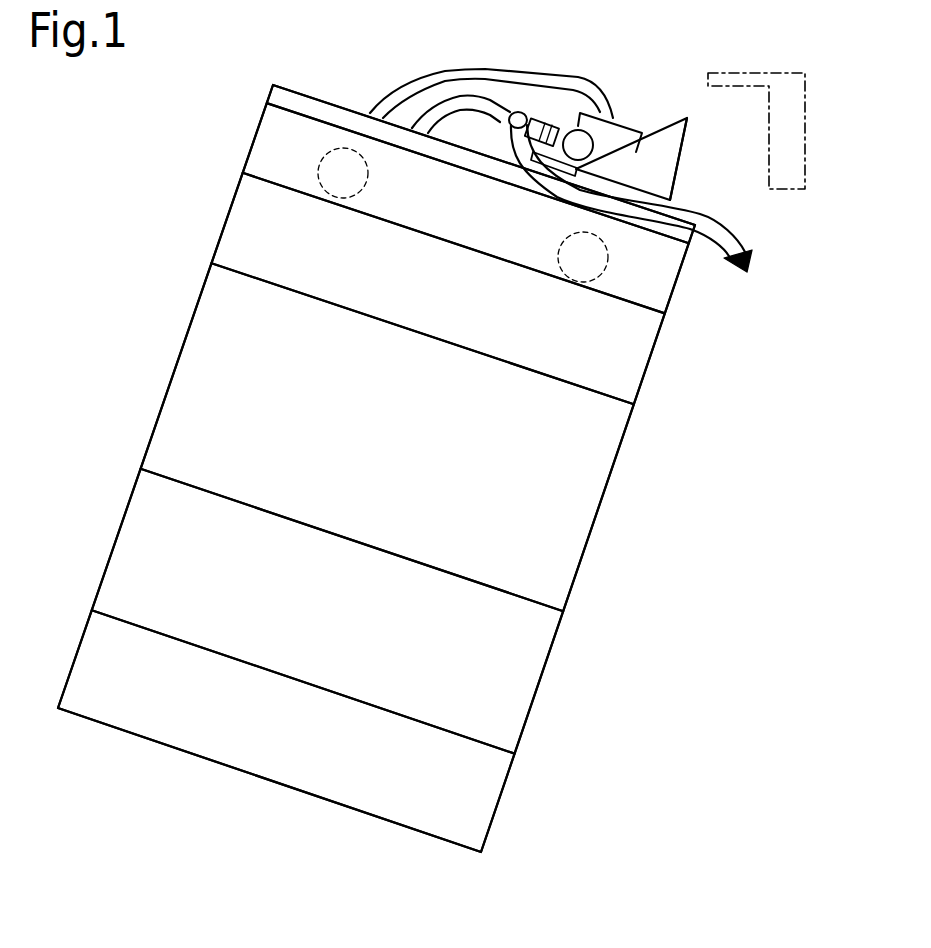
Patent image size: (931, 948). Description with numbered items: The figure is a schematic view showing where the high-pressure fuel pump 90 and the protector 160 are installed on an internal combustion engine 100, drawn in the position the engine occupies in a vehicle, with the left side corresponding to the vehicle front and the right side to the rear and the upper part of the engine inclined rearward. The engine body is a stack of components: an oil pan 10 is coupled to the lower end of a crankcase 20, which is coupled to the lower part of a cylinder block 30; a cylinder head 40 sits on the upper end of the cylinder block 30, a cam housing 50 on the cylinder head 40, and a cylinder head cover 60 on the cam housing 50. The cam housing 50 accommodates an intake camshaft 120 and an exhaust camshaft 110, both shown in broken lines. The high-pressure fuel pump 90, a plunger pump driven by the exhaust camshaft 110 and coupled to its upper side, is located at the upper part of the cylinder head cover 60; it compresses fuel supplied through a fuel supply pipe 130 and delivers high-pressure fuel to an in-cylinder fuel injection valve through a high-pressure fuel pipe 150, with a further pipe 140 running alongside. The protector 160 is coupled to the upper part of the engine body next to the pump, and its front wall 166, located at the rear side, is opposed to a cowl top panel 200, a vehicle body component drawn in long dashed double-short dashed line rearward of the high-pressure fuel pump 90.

The internal combustion engine 100 is at (65, 152).
The oil pan 10 is at (494, 804).
The crankcase 20 is at (533, 690).
The cylinder block 30 is at (598, 512).
The cylinder head 40 is at (648, 362).
The cam housing 50 is at (258, 130).
The cylinder head cover 60 is at (287, 94).
The high-pressure fuel pump 90 is at (627, 130).
The exhaust camshaft 110 is at (563, 240).
The intake camshaft 120 is at (370, 175).
The fuel supply pipe 130 is at (738, 235).
The inner hose 140 is at (442, 104).
The high-pressure fuel pipe 150 is at (530, 66).
The protector 160 is at (665, 176).
The front wall 166 is at (684, 140).
The cowl top panel 200 is at (757, 73).